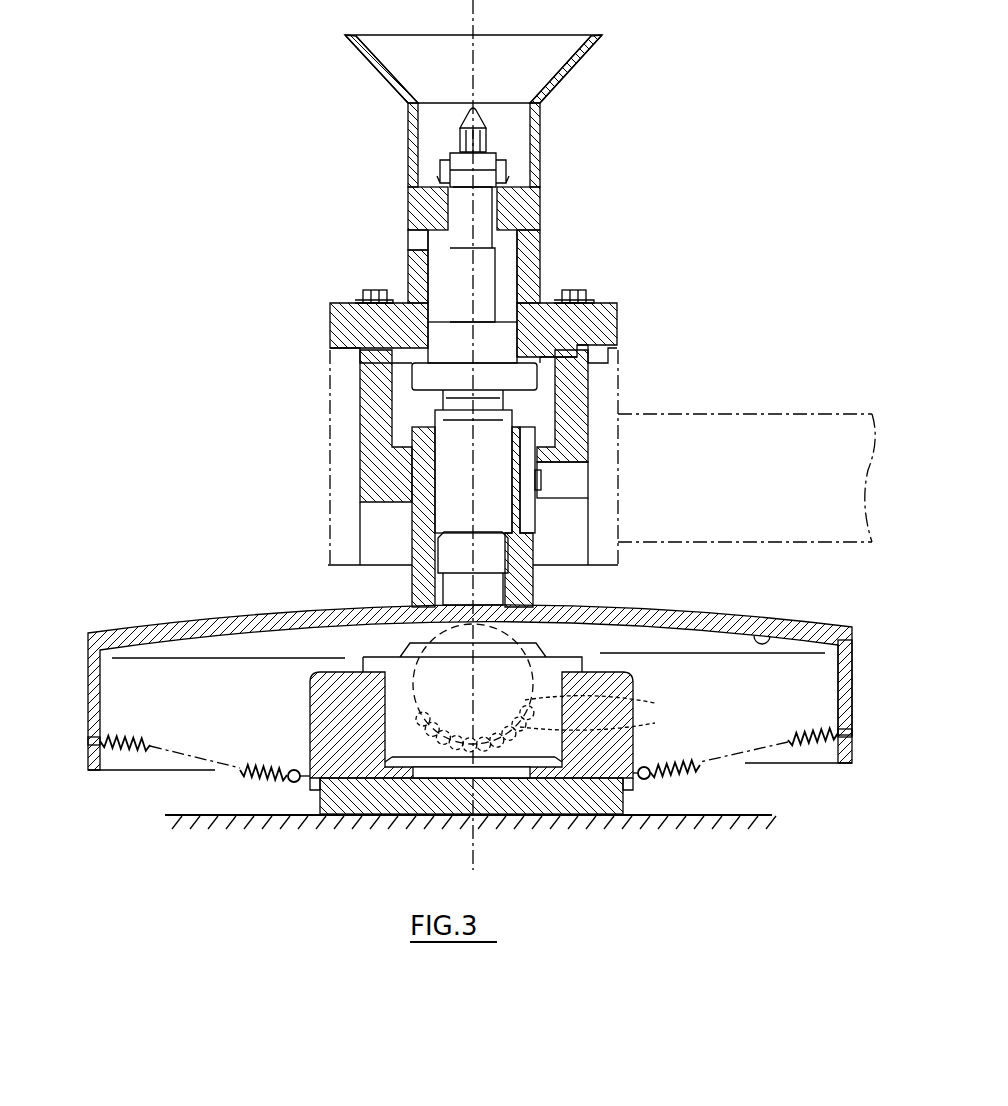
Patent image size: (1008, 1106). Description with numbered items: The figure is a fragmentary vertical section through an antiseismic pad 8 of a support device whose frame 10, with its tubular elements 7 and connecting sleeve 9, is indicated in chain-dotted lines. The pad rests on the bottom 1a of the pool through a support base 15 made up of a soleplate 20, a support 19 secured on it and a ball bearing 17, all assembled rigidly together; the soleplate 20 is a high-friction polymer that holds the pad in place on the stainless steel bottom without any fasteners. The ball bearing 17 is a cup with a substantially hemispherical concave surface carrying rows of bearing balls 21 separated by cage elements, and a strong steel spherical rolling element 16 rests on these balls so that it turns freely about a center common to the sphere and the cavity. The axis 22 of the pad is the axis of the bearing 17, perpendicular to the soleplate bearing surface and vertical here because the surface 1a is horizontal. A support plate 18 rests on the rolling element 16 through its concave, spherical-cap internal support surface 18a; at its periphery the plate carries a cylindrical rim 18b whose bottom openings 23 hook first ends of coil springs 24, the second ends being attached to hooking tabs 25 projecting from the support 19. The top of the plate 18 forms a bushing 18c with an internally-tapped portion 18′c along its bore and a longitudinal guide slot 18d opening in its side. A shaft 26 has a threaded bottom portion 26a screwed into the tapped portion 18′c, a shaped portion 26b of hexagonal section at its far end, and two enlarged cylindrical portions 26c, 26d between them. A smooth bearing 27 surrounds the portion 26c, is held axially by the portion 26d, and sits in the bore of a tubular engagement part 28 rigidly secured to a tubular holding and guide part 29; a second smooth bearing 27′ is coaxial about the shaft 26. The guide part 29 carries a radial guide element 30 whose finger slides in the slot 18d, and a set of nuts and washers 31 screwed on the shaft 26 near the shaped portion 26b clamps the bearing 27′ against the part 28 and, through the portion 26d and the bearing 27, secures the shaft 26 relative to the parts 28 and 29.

The bottom of the pool 1a is at (718, 818).
The tubular element 7 is at (735, 430).
The antiseismic pad 8 is at (243, 415).
The connecting sleeve 9 is at (605, 392).
The frame 10 is at (787, 425).
The support base 15 is at (297, 792).
The spherical rolling element 16 is at (450, 635).
The ball bearing 17 is at (512, 747).
The support plate 18 is at (680, 625).
The internal support surface 18a is at (765, 633).
The cylindrical rim 18b is at (838, 695).
The bushing 18c is at (430, 543).
The internally-tapped portion 18′c is at (533, 565).
The longitudinal guide slot 18d is at (528, 458).
The support 19 is at (597, 765).
The soleplate 20 is at (370, 803).
The bearing balls 21 is at (600, 712).
The axis of the antiseismic pad 22 is at (475, 556).
The openings 23 is at (88, 757).
The coil springs 24 is at (130, 740).
The hooking tabs 25 is at (298, 770).
The shaft 26 is at (472, 343).
The threaded bottom portion 26a is at (465, 445).
The shaped portion 26b is at (477, 137).
The diametrically-enlarged cylindrical portion 26c is at (445, 333).
The diametrically-enlarged cylindrical portion 26d is at (417, 378).
The smooth bearing 27 is at (560, 342).
The second smooth bearing 27′ is at (445, 208).
The tubular engagement part 28 is at (527, 253).
The holding and guide part 29 is at (375, 465).
The guide element 30 is at (568, 478).
The set of nuts and washers 31 is at (497, 178).